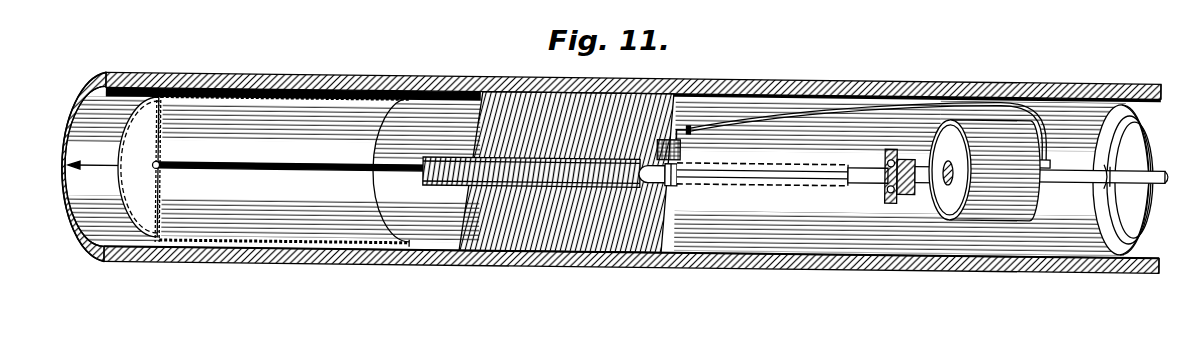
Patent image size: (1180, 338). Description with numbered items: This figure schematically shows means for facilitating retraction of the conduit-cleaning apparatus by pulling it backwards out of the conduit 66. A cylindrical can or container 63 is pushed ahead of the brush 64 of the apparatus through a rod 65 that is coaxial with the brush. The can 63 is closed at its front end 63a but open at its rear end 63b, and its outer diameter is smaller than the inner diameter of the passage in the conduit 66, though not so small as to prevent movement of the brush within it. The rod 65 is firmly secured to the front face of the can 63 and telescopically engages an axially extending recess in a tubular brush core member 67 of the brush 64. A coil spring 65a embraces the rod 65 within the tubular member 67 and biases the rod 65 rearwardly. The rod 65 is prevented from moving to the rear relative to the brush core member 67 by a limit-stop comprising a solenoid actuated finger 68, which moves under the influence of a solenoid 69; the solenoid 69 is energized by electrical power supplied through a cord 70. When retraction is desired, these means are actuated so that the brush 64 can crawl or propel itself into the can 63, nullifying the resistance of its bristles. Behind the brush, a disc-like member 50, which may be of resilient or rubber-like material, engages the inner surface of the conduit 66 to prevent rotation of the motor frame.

The conduit 66 is at (72, 227).
The cylindrical can 63 is at (273, 243).
The front end of the can 63a is at (153, 233).
The rear end of the can 63b is at (441, 152).
The brush 64 is at (492, 226).
The rod 65 is at (390, 176).
The coil spring 65a is at (443, 181).
The solenoid actuated finger 68 is at (668, 184).
The tubular brush core member 67 is at (713, 188).
The solenoid 69 is at (683, 151).
The cord 70 is at (789, 132).
The disc-like member 50 is at (1110, 195).